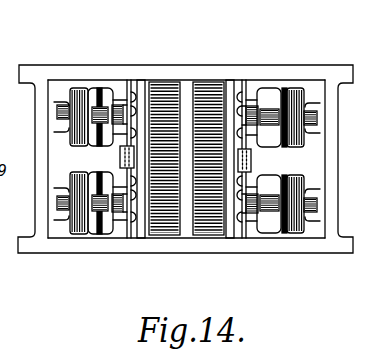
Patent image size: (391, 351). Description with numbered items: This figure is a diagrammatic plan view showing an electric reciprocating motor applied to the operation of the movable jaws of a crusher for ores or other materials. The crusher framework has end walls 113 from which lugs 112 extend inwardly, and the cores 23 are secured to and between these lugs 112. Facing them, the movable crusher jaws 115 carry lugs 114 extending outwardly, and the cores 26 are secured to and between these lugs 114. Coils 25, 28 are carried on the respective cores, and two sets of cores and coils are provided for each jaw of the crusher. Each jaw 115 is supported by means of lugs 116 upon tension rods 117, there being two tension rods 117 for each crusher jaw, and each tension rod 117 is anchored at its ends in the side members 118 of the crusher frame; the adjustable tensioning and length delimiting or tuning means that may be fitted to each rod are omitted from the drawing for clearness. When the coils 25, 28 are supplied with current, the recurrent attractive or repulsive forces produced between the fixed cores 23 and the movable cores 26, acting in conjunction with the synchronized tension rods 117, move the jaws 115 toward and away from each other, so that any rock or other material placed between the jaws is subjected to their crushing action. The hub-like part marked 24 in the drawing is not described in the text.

The core 23 is at (62, 105).
The hub 24 is at (270, 118).
The coil 25 is at (278, 100).
The core 26 is at (130, 110).
The coil 28 is at (124, 95).
The lug 112 is at (318, 128).
The end wall 113 is at (40, 110).
The lug 114 is at (117, 104).
The movable crusher jaw 115 is at (160, 222).
The lug 116 is at (122, 152).
The tension rod 117 is at (129, 100).
The side member 118 is at (75, 72).